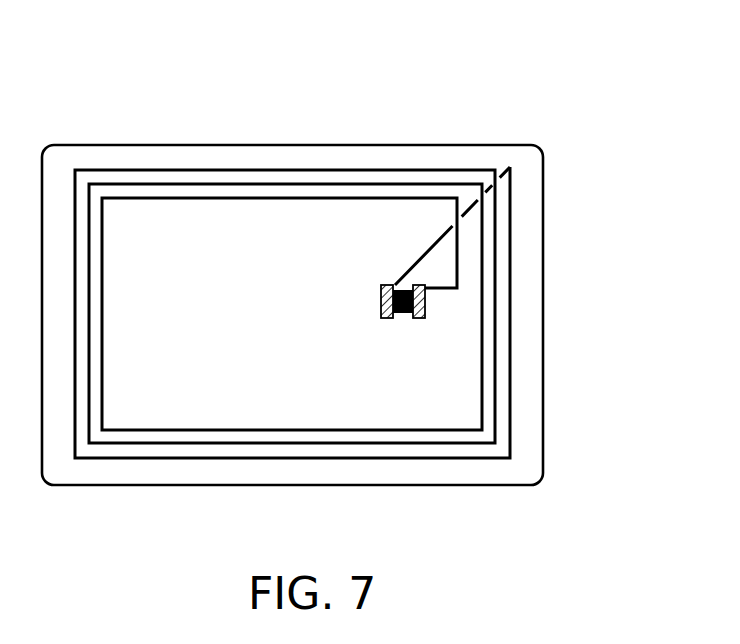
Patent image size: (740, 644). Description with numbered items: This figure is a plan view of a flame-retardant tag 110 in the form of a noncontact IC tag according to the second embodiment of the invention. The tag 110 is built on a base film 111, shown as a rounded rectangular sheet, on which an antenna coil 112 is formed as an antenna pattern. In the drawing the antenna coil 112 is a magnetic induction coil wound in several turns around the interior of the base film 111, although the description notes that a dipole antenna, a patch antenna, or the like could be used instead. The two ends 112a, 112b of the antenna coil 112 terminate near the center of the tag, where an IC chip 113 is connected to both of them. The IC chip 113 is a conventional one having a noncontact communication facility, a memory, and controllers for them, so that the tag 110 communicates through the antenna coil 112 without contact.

The flame-retardant tag 110 is at (283, 126).
The base film 111 is at (543, 424).
The antenna coil 112 is at (191, 465).
The end of the antenna coil 112a is at (381, 300).
The end of the antenna coil 112b is at (425, 301).
The IC chip 113 is at (403, 314).